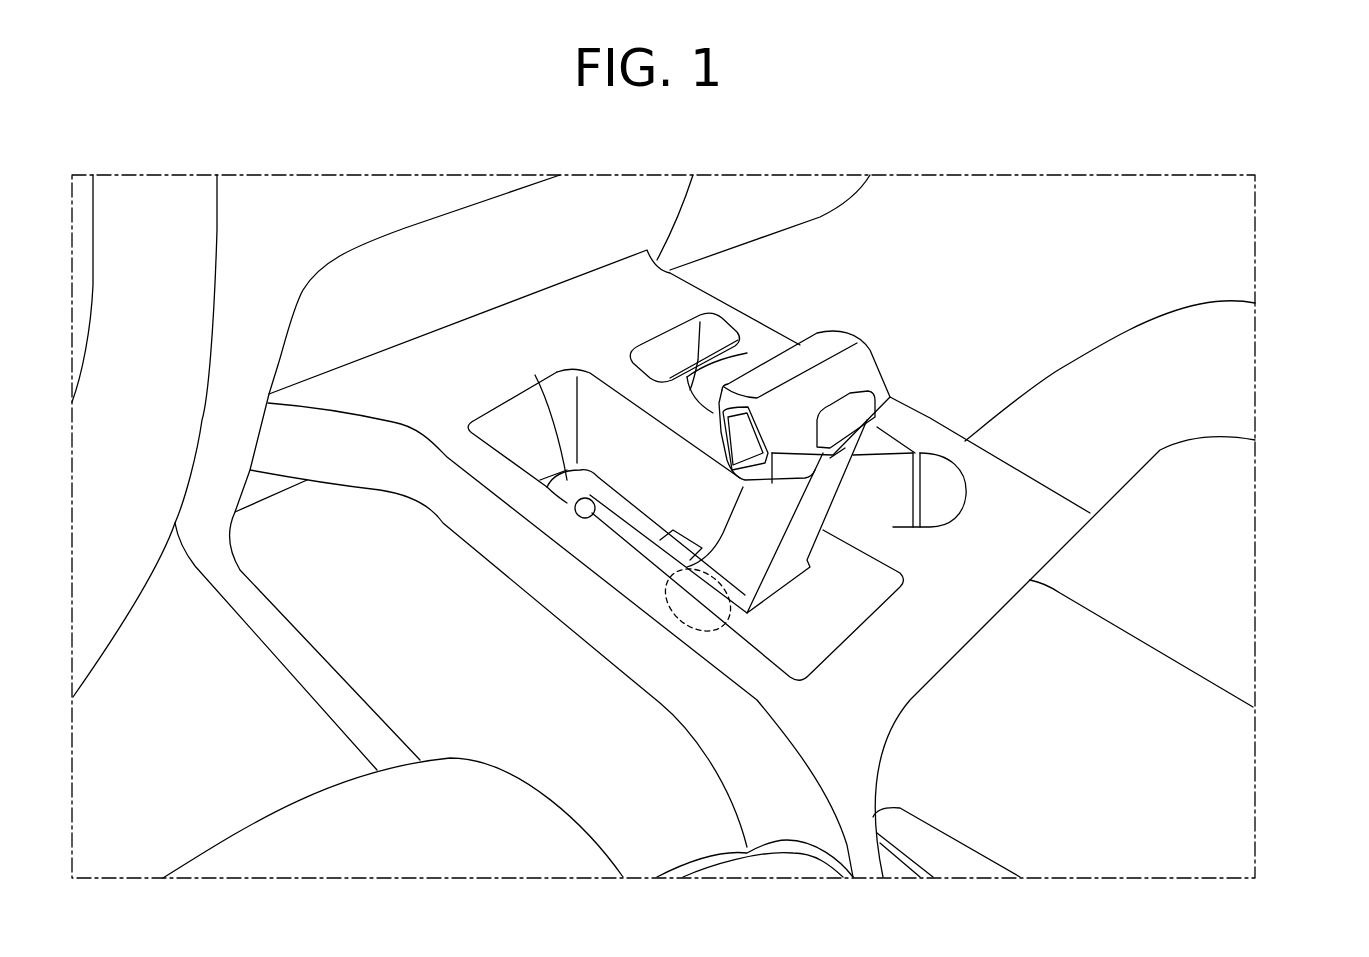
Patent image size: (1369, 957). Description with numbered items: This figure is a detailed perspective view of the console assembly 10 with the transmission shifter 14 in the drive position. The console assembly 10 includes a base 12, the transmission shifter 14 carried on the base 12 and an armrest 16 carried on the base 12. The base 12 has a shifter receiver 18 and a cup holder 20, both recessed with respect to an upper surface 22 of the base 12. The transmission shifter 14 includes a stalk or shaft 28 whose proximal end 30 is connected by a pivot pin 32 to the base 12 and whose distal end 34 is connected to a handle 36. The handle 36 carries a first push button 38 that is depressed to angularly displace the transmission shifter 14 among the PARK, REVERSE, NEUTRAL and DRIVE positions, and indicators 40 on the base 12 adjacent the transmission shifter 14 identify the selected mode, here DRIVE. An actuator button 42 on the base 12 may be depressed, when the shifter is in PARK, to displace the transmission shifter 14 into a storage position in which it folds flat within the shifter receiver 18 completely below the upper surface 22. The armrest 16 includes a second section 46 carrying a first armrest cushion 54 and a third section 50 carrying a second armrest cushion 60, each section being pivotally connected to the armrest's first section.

The console assembly 10 is at (993, 223).
The base 12 is at (773, 793).
The transmission shifter 14 is at (880, 370).
The armrest 16 is at (1213, 423).
The shifter receiver 18 is at (560, 460).
The cup holder 20 is at (927, 493).
The upper surface 22 is at (941, 609).
The stalk or shaft 28 is at (737, 533).
The proximal end 30 is at (713, 577).
The distal end 34 is at (837, 463).
The handle 36 is at (823, 353).
The first push button 38 is at (740, 430).
The indicators 40 is at (647, 587).
The actuator button 42 is at (568, 506).
The pivot pin 32 is at (700, 598).
The second section 46 is at (1130, 782).
The third section 50 is at (1200, 580).
The first armrest cushion 54 is at (985, 742).
The second armrest cushion 60 is at (1143, 522).